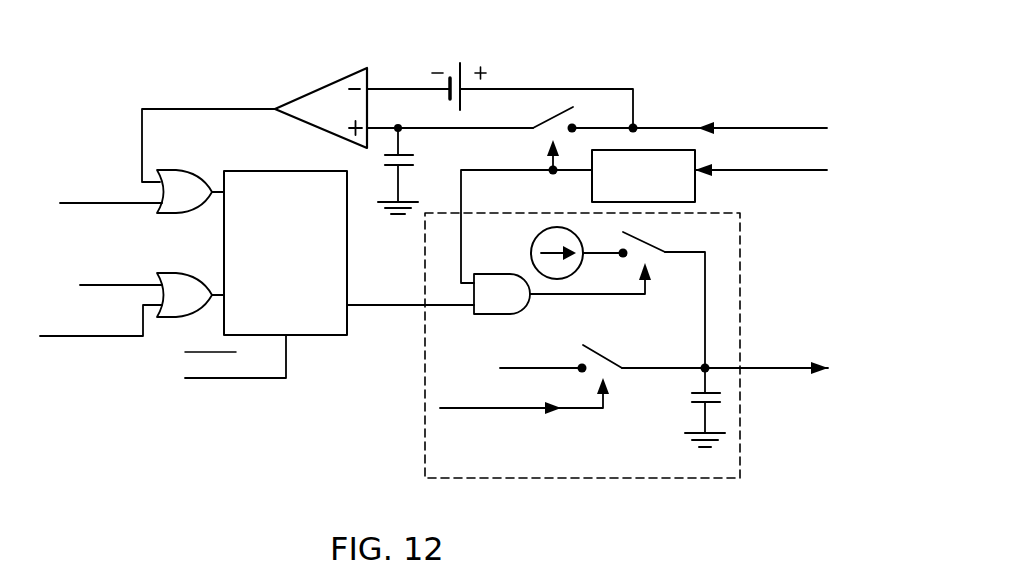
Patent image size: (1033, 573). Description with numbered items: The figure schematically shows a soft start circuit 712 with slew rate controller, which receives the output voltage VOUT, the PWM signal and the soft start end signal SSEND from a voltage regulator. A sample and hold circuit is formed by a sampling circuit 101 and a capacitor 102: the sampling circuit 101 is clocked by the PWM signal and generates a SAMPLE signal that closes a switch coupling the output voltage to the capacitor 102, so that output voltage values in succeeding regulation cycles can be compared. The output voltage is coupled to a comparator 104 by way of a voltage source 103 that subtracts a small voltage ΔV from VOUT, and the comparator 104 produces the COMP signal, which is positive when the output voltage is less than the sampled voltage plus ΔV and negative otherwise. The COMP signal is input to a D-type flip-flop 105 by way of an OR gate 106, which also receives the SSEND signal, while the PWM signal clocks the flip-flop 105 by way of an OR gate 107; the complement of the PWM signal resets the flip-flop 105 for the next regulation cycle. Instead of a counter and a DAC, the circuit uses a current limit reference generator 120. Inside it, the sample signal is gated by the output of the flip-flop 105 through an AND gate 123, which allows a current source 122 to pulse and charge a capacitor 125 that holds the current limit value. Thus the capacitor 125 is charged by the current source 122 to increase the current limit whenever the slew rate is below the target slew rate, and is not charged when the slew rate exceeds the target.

The soft start circuit 712 is at (92, 86).
The comparator 104 is at (328, 86).
The D-type flip-flop 105 is at (243, 170).
The OR gate 106 is at (165, 170).
The OR gate 107 is at (184, 272).
The voltage source 103 is at (532, 78).
The capacitor 102 is at (419, 169).
The sampling circuit 101 is at (697, 190).
The current limit reference generator 120 is at (637, 480).
The current source 122 is at (531, 242).
The AND gate 123 is at (491, 316).
The capacitor 125 is at (687, 407).